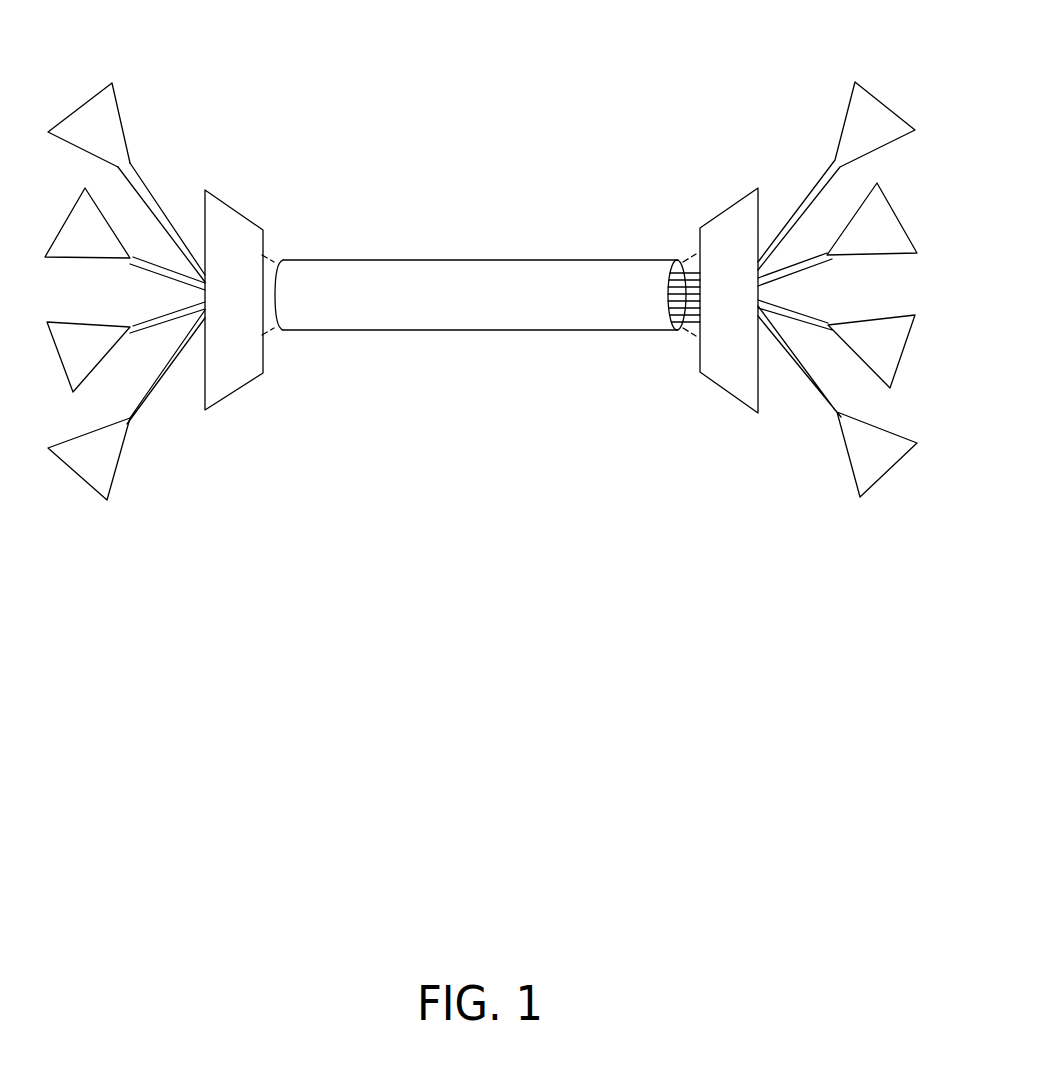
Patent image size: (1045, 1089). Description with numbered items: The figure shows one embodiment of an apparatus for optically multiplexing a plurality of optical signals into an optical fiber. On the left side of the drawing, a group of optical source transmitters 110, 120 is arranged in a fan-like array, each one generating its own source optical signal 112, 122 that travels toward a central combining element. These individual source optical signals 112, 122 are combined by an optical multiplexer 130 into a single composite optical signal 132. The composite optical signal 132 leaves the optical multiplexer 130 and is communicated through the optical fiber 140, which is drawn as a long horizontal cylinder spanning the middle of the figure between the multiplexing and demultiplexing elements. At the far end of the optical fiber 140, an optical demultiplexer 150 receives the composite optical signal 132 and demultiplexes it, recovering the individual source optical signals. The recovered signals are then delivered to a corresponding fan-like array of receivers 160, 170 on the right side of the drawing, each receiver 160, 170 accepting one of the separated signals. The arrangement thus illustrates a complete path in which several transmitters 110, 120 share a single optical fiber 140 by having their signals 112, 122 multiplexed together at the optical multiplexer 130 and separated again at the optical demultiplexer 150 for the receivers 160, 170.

The optical source transmitter 110 is at (112, 83).
The source optical signal 112 is at (157, 210).
The optical source transmitter 120 is at (115, 477).
The source optical signal 122 is at (150, 397).
The optical multiplexer 130 is at (250, 380).
The composite optical signal 132 is at (275, 257).
The optical fiber 140 is at (450, 258).
The optical demultiplexer 150 is at (707, 222).
The receiver 160 is at (845, 118).
The receiver 170 is at (850, 460).